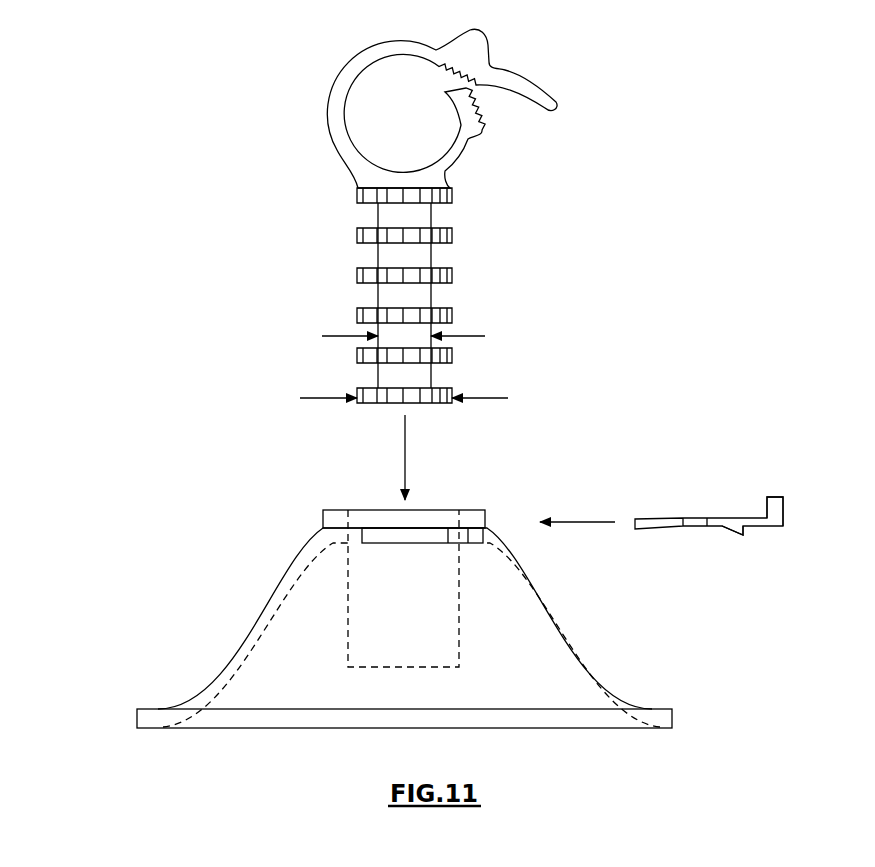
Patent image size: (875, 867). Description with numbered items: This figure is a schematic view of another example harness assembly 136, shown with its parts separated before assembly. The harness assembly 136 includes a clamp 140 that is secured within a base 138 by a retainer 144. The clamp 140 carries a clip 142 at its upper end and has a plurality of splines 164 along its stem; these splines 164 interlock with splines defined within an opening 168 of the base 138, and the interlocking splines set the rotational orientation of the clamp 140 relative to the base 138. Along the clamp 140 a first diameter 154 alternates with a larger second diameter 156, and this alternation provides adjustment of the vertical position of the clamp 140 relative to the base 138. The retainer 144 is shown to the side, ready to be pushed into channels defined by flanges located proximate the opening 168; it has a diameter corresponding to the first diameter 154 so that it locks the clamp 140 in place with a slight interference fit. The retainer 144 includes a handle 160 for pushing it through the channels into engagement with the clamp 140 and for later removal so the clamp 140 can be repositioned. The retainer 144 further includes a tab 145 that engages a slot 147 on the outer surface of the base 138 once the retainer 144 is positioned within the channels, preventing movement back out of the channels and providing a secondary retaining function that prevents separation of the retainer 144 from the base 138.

The harness assembly 136 is at (585, 213).
The clamp 140 is at (270, 307).
The clip 142 is at (348, 173).
The splines 164 is at (452, 278).
The first diameter 154 is at (473, 336).
The second diameter 156 is at (492, 398).
The opening 168 is at (447, 522).
The slot 147 is at (483, 527).
The base 138 is at (522, 537).
The retainer 144 is at (667, 520).
The handle 160 is at (778, 505).
The tab 145 is at (733, 536).